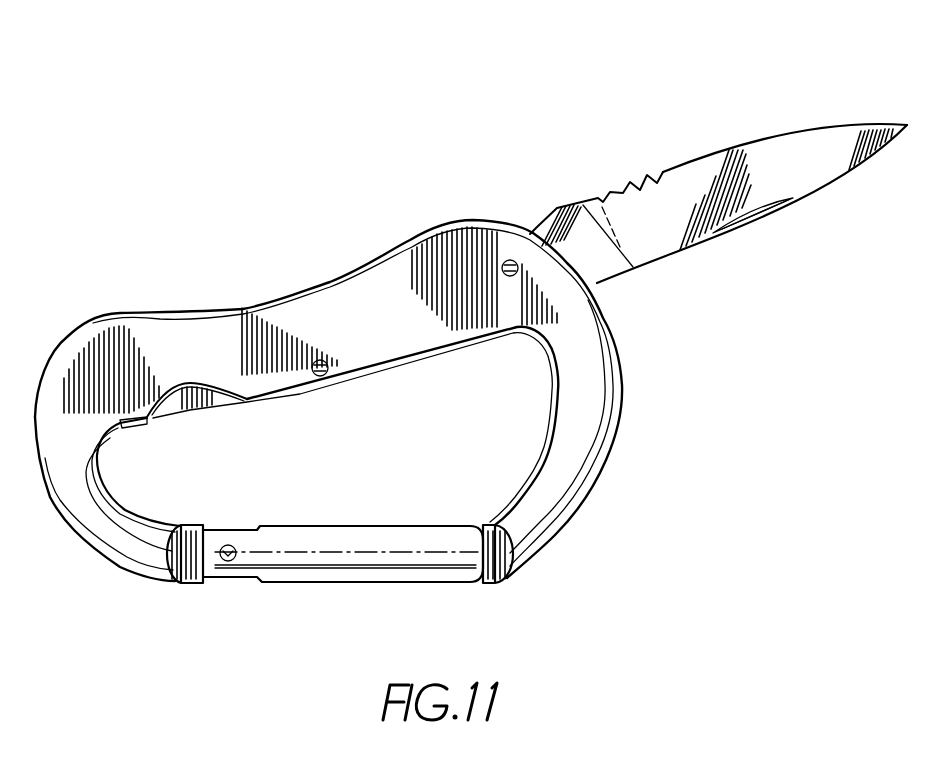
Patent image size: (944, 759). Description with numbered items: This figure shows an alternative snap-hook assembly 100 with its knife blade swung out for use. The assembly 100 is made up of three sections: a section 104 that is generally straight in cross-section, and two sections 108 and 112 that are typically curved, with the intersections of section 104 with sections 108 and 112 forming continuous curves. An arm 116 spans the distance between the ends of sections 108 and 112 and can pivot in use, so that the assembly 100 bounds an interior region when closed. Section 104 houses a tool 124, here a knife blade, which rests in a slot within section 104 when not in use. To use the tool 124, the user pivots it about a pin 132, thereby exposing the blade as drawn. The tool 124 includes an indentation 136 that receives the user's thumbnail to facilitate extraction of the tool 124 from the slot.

The snap-hook assembly 100 is at (386, 119).
The section 104 is at (330, 300).
The section 108 is at (82, 500).
The section 112 is at (587, 448).
The arm 116 is at (345, 553).
The tool 124 is at (785, 143).
The pin 132 is at (506, 259).
The indentation 136 is at (765, 210).